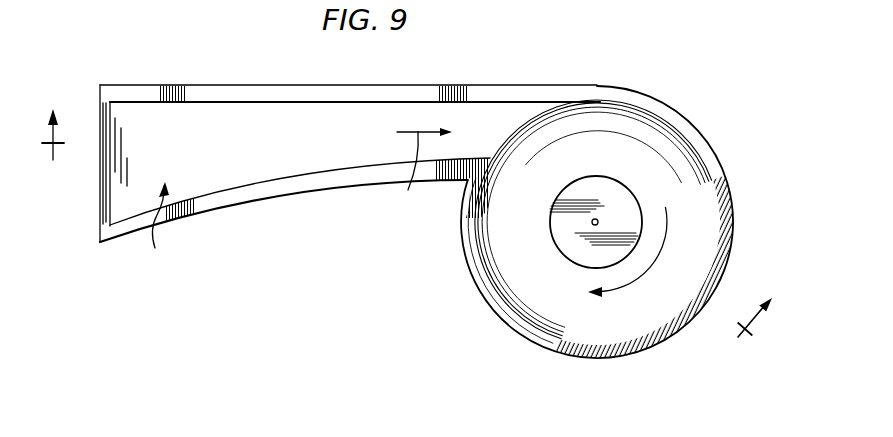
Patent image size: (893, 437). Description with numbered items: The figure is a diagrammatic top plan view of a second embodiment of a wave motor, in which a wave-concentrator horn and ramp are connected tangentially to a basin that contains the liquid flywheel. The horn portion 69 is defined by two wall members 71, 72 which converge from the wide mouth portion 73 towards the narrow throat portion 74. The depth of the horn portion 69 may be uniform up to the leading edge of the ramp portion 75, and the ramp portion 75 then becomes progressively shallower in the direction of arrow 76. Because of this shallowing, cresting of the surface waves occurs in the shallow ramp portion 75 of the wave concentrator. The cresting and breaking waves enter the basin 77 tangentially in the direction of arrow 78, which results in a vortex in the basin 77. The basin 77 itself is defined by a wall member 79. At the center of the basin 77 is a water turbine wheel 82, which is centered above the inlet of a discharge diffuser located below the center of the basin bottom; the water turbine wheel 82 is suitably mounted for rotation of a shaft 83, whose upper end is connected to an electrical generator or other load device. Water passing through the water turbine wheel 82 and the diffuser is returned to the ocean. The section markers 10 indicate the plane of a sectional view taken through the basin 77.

The section line 10- 10 is at (424, 210).
The horn portion 69 is at (154, 232).
The wall member 71 is at (188, 85).
The wall member 72 is at (207, 203).
The mouth portion 73 is at (100, 211).
The throat portion 74 is at (518, 120).
The ramp portion 75 is at (226, 166).
The arrow 76 is at (424, 175).
The basin 77 is at (675, 185).
The arrow 78 is at (665, 245).
The wall member 79 is at (645, 343).
The water turbine wheel 82 is at (562, 244).
The shaft 83 is at (596, 219).